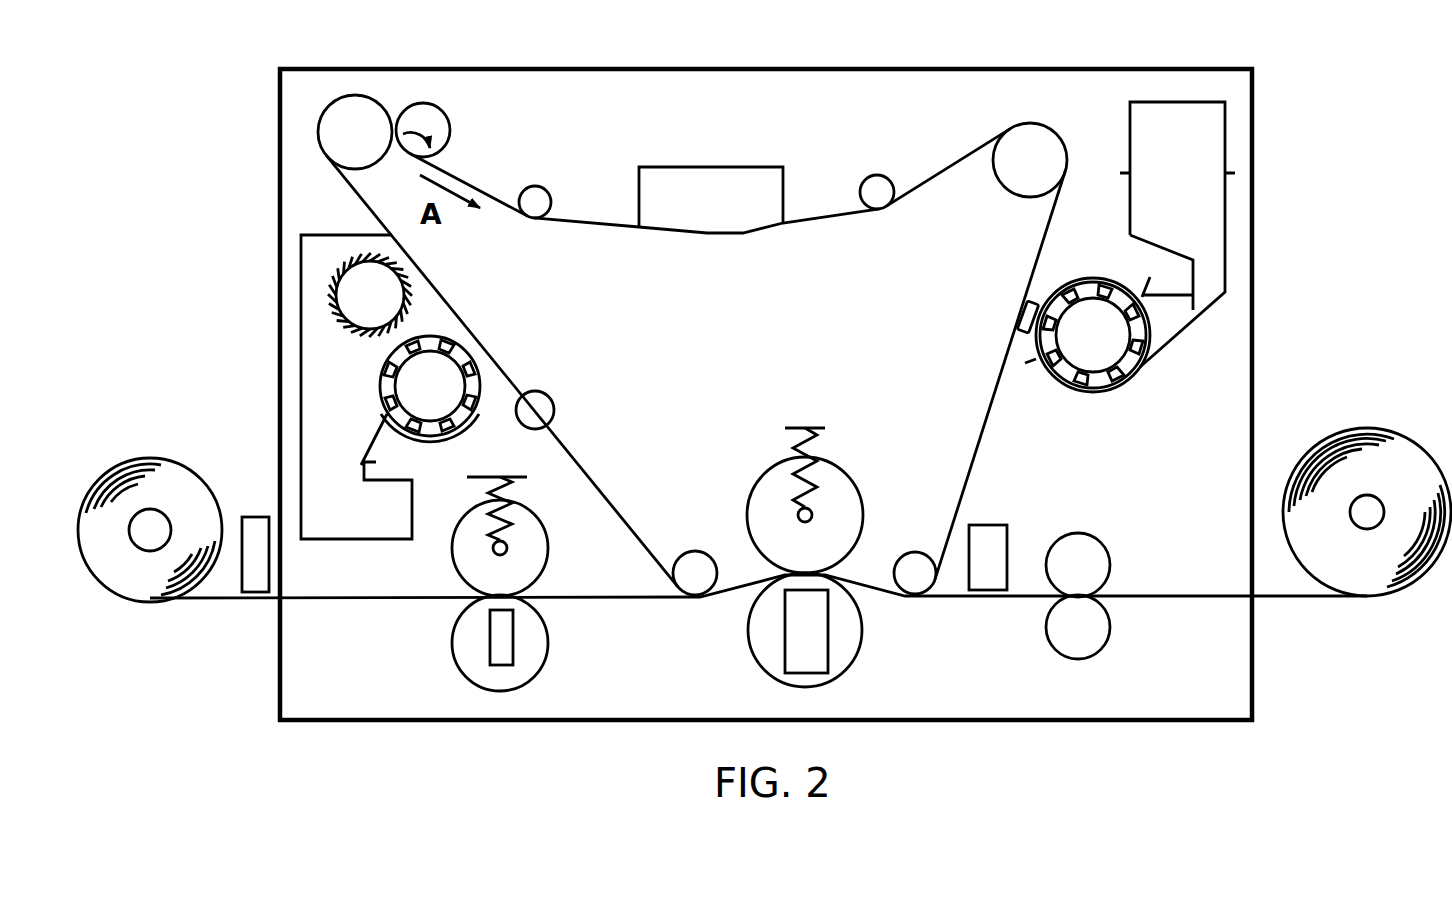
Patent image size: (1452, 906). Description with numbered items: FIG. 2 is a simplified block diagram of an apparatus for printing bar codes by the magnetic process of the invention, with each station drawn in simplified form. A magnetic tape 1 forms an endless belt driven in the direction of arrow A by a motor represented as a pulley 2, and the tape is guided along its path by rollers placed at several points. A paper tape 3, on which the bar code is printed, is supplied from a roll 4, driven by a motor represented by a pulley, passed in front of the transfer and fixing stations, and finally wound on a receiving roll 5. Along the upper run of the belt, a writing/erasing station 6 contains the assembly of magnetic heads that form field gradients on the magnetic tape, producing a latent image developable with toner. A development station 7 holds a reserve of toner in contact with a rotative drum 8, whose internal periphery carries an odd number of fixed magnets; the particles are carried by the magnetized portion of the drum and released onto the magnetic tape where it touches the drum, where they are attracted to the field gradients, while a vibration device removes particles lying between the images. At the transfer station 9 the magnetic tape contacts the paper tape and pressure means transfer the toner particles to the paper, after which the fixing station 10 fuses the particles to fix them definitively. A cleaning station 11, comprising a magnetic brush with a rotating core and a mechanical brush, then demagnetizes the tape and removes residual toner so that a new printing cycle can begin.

The magnetic tape 1 is at (498, 178).
The pulley 2 is at (462, 122).
The paper tape 3 is at (1174, 612).
The roll 4 is at (1364, 420).
The receiving roll 5 is at (170, 450).
The writing/erasing station 6 is at (730, 158).
The development station 7 is at (1184, 358).
The rotative drum 8 is at (1058, 378).
The transfer station 9 is at (878, 498).
The fixing station 10 is at (548, 580).
The cleaning station 11 is at (342, 357).